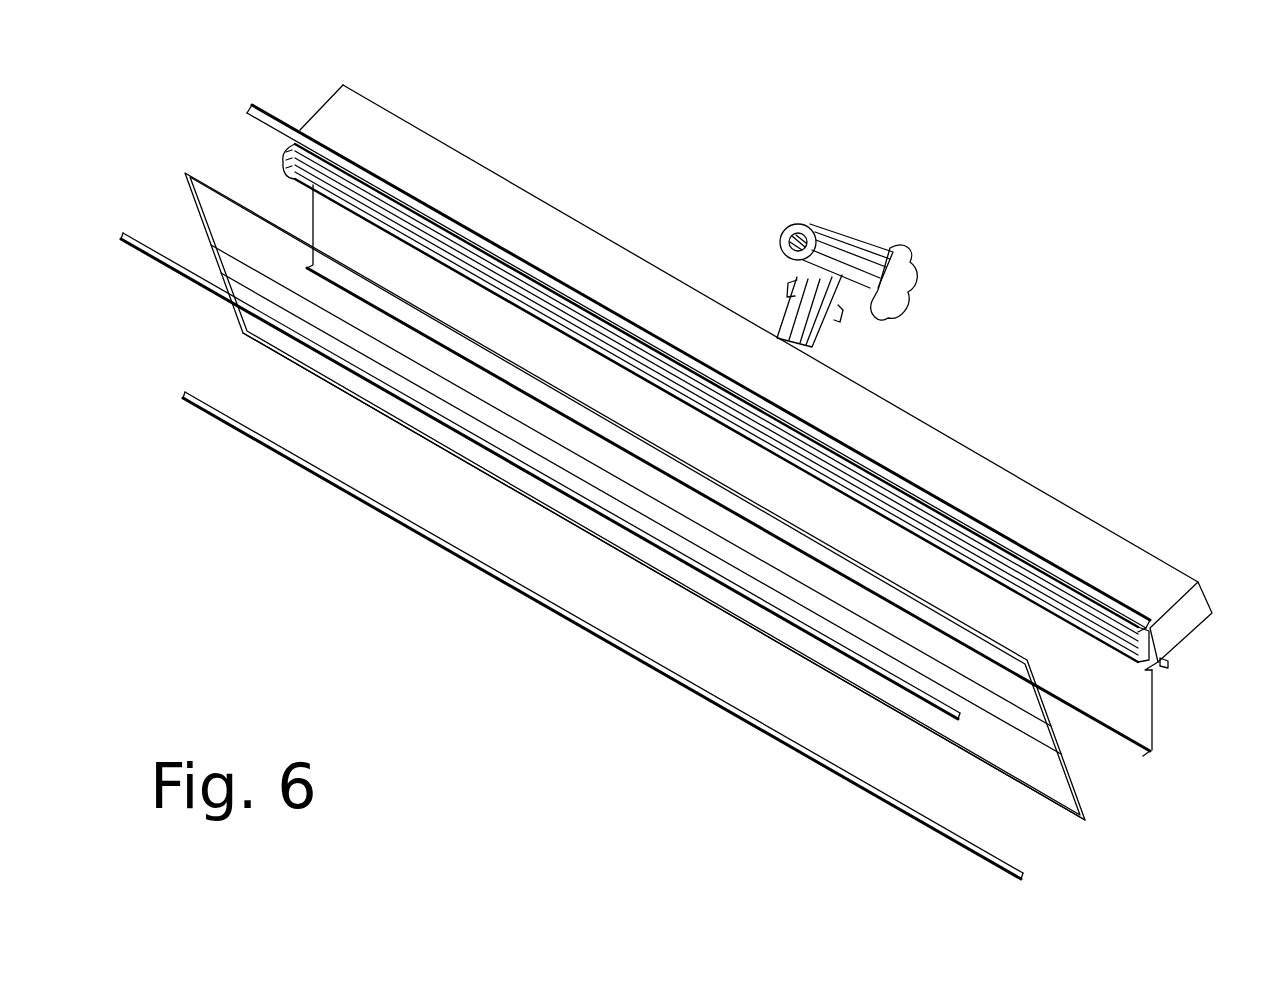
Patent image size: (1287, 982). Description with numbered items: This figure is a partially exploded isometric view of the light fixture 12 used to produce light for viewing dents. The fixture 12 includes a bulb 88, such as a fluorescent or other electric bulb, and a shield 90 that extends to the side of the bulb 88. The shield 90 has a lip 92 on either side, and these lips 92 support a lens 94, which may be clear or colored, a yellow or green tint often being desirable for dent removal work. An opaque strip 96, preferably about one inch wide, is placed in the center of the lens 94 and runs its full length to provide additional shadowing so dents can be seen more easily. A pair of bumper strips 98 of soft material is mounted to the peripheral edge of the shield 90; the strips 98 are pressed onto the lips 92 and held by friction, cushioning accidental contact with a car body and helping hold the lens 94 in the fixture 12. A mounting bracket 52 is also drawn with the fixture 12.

The fixture 12 is at (631, 167).
The mounting bracket 52 is at (888, 221).
The bulb 88 is at (302, 192).
The shield 90 is at (288, 110).
The lip 92 is at (250, 108).
The lens 94 is at (1109, 798).
The opaque strip 96 is at (1000, 770).
The bumper strips 98 is at (165, 263).